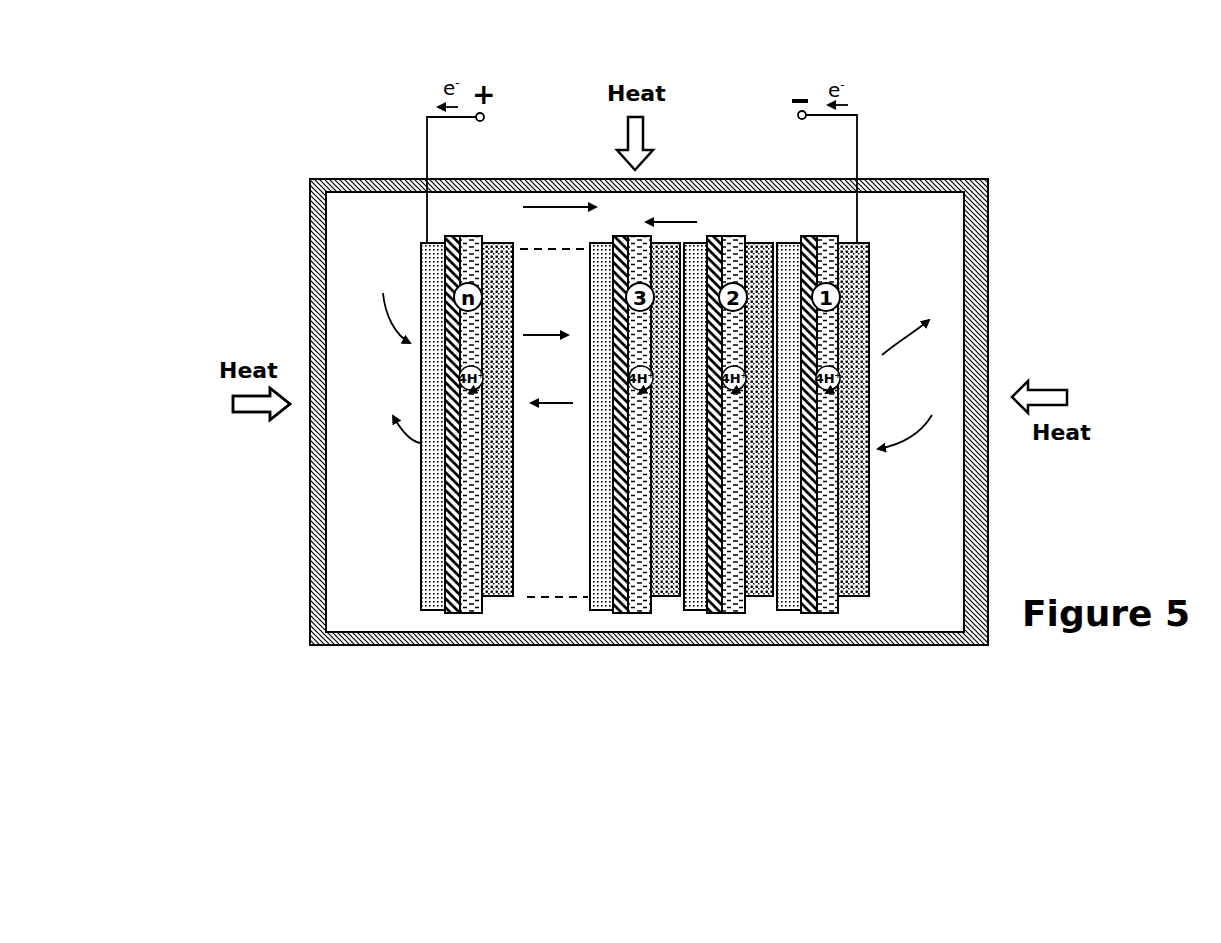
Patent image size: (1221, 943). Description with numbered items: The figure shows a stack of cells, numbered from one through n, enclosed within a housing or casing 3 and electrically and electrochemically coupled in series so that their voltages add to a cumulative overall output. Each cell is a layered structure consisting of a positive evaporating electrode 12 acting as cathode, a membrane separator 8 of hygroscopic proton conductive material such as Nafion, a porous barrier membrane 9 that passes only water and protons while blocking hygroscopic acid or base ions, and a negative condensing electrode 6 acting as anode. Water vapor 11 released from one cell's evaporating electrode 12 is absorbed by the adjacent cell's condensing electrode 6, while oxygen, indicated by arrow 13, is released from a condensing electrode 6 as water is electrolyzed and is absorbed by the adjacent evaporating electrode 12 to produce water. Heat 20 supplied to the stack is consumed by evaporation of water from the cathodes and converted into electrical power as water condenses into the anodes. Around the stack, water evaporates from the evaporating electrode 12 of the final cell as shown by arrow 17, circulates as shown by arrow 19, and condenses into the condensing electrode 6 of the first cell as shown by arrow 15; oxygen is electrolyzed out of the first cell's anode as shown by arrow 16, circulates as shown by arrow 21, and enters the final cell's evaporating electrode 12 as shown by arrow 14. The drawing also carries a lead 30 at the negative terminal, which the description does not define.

The housing 3 is at (992, 541).
The condensing electrode 6 is at (514, 505).
The membrane separator 8 is at (455, 614).
The porous barrier membrane 9 is at (482, 614).
The water vapor 11 is at (560, 403).
The evaporating electrode 12 is at (421, 500).
The oxygen arrow 13 is at (548, 335).
The directional arrow 14 is at (395, 325).
The directional arrow 15 is at (922, 437).
The directional arrow 16 is at (930, 335).
The arrow 17 is at (403, 433).
The arrow 19 is at (583, 206).
The heat 20 is at (235, 434).
The directional arrow 21 is at (700, 215).
The electron flow path 30 is at (838, 205).